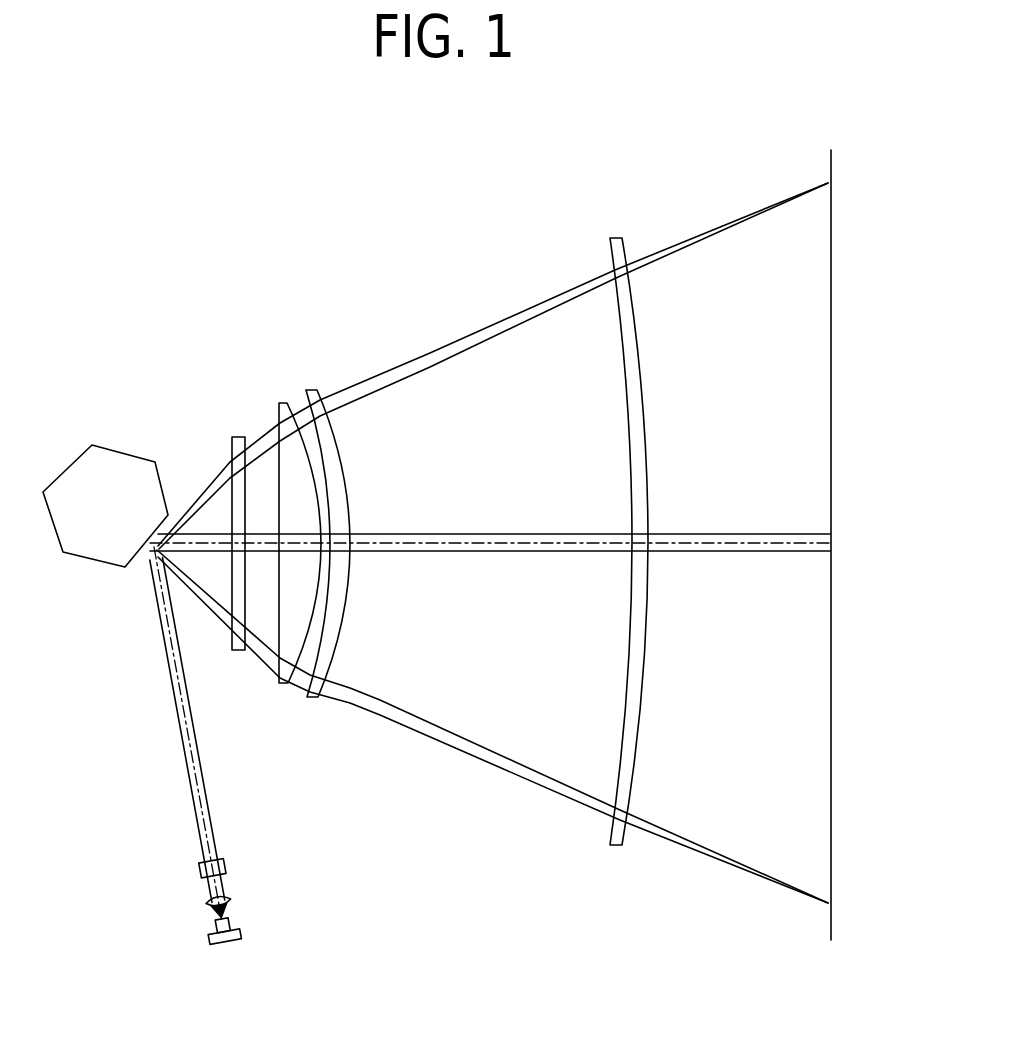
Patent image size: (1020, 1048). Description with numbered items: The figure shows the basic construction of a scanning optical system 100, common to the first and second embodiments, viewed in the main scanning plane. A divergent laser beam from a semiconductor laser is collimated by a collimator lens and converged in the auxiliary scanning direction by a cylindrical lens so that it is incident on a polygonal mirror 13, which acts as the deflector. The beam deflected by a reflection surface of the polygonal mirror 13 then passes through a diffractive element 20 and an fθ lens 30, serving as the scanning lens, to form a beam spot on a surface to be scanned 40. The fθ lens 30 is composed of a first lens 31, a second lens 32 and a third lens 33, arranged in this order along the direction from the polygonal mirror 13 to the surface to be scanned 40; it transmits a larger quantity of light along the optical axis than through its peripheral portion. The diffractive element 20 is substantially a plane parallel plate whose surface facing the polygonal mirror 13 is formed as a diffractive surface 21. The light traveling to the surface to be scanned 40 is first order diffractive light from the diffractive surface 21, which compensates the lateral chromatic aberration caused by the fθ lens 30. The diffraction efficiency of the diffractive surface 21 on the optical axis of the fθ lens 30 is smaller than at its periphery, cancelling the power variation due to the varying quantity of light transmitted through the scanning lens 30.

The polygonal mirror 13 is at (97, 555).
The diffractive element 20 is at (237, 660).
The diffractive surface 21 is at (231, 450).
The fθ lens 30 is at (617, 180).
The first lens 31 is at (283, 402).
The second lens 32 is at (311, 390).
The third lens 33 is at (609, 250).
The surface to be scanned 40 is at (833, 168).
The scanning optical system 100 is at (419, 893).